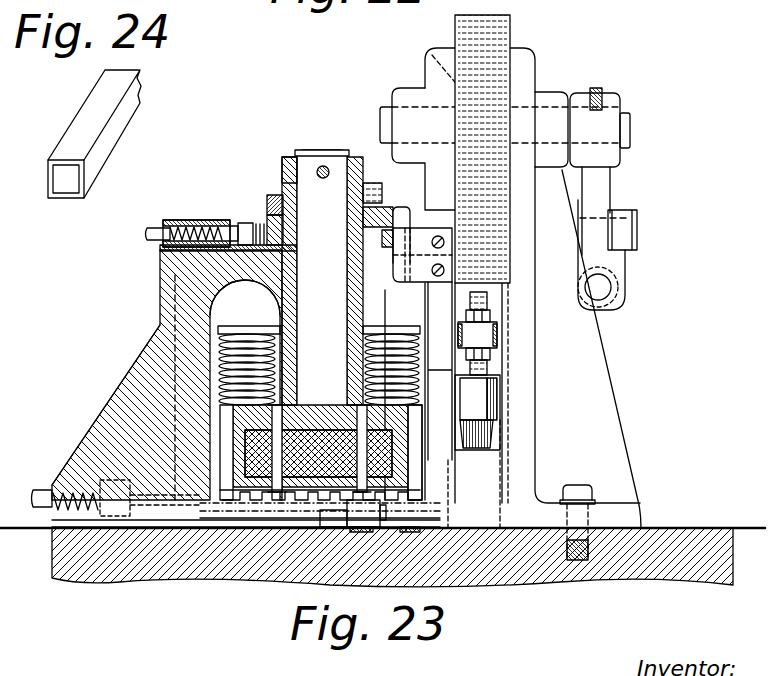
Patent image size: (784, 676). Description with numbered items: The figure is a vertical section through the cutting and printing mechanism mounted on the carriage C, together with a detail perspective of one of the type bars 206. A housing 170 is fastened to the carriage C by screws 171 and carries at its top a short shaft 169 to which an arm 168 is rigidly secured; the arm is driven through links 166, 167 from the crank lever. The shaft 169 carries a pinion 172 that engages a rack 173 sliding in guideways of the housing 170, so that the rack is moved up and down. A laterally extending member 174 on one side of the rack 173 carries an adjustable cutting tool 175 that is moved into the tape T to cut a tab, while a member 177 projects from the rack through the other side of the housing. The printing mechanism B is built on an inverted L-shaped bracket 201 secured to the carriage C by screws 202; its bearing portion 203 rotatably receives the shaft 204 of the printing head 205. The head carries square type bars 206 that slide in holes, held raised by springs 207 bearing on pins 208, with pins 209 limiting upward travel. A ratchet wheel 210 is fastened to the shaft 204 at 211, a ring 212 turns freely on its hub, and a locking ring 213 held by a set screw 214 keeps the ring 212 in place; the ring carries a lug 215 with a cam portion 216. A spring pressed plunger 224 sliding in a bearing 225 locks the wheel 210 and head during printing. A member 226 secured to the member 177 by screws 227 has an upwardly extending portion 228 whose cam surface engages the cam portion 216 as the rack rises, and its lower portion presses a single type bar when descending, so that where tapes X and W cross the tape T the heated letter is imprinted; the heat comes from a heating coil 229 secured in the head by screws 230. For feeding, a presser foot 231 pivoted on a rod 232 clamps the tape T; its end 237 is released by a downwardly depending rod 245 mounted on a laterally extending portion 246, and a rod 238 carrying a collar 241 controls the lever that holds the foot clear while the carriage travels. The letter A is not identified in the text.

In FIG. 23, the link 166 is at (612, 335).
In FIG. 23, the link 167 is at (615, 262).
In FIG. 23, the arm 168 is at (600, 150).
In FIG. 23, the short shaft 169 is at (545, 112).
In FIG. 23, the housing 170 is at (522, 60).
In FIG. 23, the screws 171 is at (585, 462).
In FIG. 23, the pinion 172 is at (458, 82).
In FIG. 23, the rack 173 is at (512, 33).
In FIG. 23, the laterally extending member 174 is at (490, 336).
In FIG. 23, the cutting tool 175 is at (480, 400).
In FIG. 23, the member 177 is at (444, 242).
In FIG. 23, the inverted L-shaped bracket 201 is at (143, 385).
In FIG. 23, the screws 202 is at (86, 448).
In FIG. 23, the bearing portion 203 is at (245, 297).
In FIG. 23, the shaft 204 is at (322, 277).
In FIG. 23, the printing head 205 is at (400, 453).
In FIG. 24, the type bars 206 is at (130, 110).
In FIG. 23, the type bars 206 is at (220, 335).
In FIG. 23, the springs 207 is at (222, 367).
In FIG. 23, the pins 208 is at (217, 327).
In FIG. 23, the pins 209 is at (218, 522).
In FIG. 23, the ratchet wheel 210 is at (267, 228).
In FIG. 23, the fastening point 211 is at (323, 178).
In FIG. 23, the ring 212 is at (275, 200).
In FIG. 23, the locking ring 213 is at (282, 180).
In FIG. 23, the set screw 214 is at (363, 212).
In FIG. 23, the projecting lug 215 is at (382, 235).
In FIG. 23, the cam portion 216 is at (385, 180).
In FIG. 23, the spring pressed plunger 224 is at (228, 233).
In FIG. 23, the bearing 225 is at (162, 247).
In FIG. 23, the laterally projecting member 226 is at (408, 278).
In FIG. 23, the screws 227 is at (444, 270).
In FIG. 23, the upwardly extending portion 228 is at (400, 207).
In FIG. 23, the heating coil 229 is at (322, 445).
In FIG. 23, the screws 230 is at (330, 480).
In FIG. 23, the presser foot 231 is at (353, 503).
In FIG. 23, the rod 232 is at (253, 487).
In FIG. 23, the end of presser foot 237 is at (335, 520).
In FIG. 23, the rod 238 is at (318, 510).
In FIG. 23, the collar 241 is at (47, 487).
In FIG. 23, the downwardly depending rod 245 is at (370, 325).
In FIG. 23, the laterally extending portion 246 is at (385, 300).
In FIG. 23, the shaft axis A is at (558, 122).
In FIG. 23, the printing mechanism B is at (268, 168).
In FIG. 23, the carriage C is at (690, 550).
In FIG. 23, the tape T is at (12, 525).
In FIG. 23, the printing tape W is at (430, 522).
In FIG. 23, the tape X is at (413, 533).